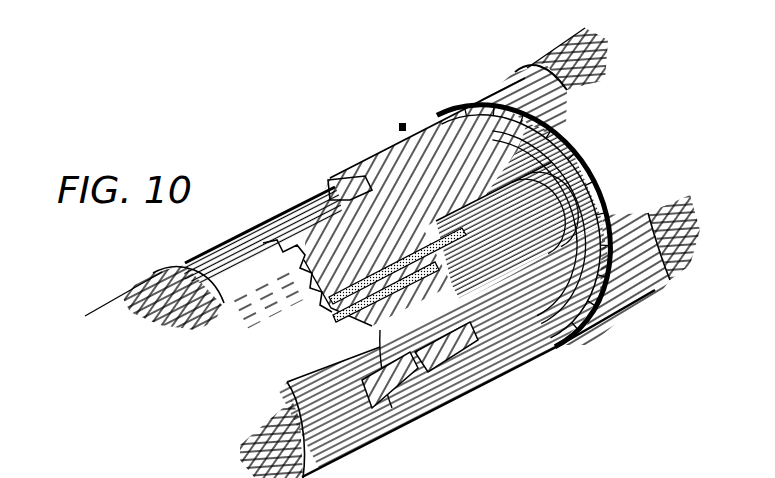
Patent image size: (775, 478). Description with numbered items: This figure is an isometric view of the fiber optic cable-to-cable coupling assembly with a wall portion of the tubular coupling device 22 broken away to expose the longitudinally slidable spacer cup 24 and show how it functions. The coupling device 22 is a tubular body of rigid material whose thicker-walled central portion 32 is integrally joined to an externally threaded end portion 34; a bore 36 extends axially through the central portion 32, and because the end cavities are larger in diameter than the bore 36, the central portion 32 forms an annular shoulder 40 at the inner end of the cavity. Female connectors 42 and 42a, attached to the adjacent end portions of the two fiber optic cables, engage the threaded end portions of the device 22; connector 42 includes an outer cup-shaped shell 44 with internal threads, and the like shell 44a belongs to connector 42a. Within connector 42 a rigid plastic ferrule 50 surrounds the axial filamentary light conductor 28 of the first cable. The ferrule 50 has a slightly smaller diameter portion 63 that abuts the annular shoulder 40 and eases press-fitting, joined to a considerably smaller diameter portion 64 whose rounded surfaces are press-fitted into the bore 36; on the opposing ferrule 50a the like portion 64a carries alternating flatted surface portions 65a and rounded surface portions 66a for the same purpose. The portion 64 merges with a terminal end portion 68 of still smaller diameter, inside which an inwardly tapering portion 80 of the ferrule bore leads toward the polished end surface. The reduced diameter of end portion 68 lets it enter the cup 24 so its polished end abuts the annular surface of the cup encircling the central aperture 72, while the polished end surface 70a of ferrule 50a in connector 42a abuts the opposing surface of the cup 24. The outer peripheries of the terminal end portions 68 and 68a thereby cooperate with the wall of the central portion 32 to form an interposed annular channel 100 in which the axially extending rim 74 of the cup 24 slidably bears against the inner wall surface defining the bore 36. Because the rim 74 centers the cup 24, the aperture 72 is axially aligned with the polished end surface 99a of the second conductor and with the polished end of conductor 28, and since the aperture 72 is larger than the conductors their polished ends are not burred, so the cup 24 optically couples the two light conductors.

The tubular coupling device 22 is at (403, 124).
The spacer cup 24 is at (420, 200).
The light conductor 28 is at (343, 294).
The central portion 32 is at (388, 194).
The end portion 34 is at (296, 250).
The bore 36 is at (340, 188).
The annular shoulder 40 is at (347, 372).
The female connector 42 is at (172, 262).
The female connector 42a is at (676, 279).
The cup-shaped shell 44 is at (246, 233).
The cable jacket 44a is at (619, 297).
The ferrule 50 is at (412, 367).
The ferrule 50a is at (516, 178).
The ferrule portion 63 is at (307, 284).
The ferrule portion 64 is at (389, 365).
The contact 64a is at (506, 172).
The sleeve 65a is at (399, 138).
The coupling ring 66a is at (580, 312).
The terminal end portion 68 is at (432, 212).
The terminal end portion 68a is at (527, 290).
The polished end surface 70a is at (562, 233).
The aperture 72 is at (528, 193).
The rim 74 is at (497, 327).
The inwardly tapering portion 80 is at (331, 308).
The polished end surface 99a is at (550, 213).
The annular channel 100 is at (458, 352).